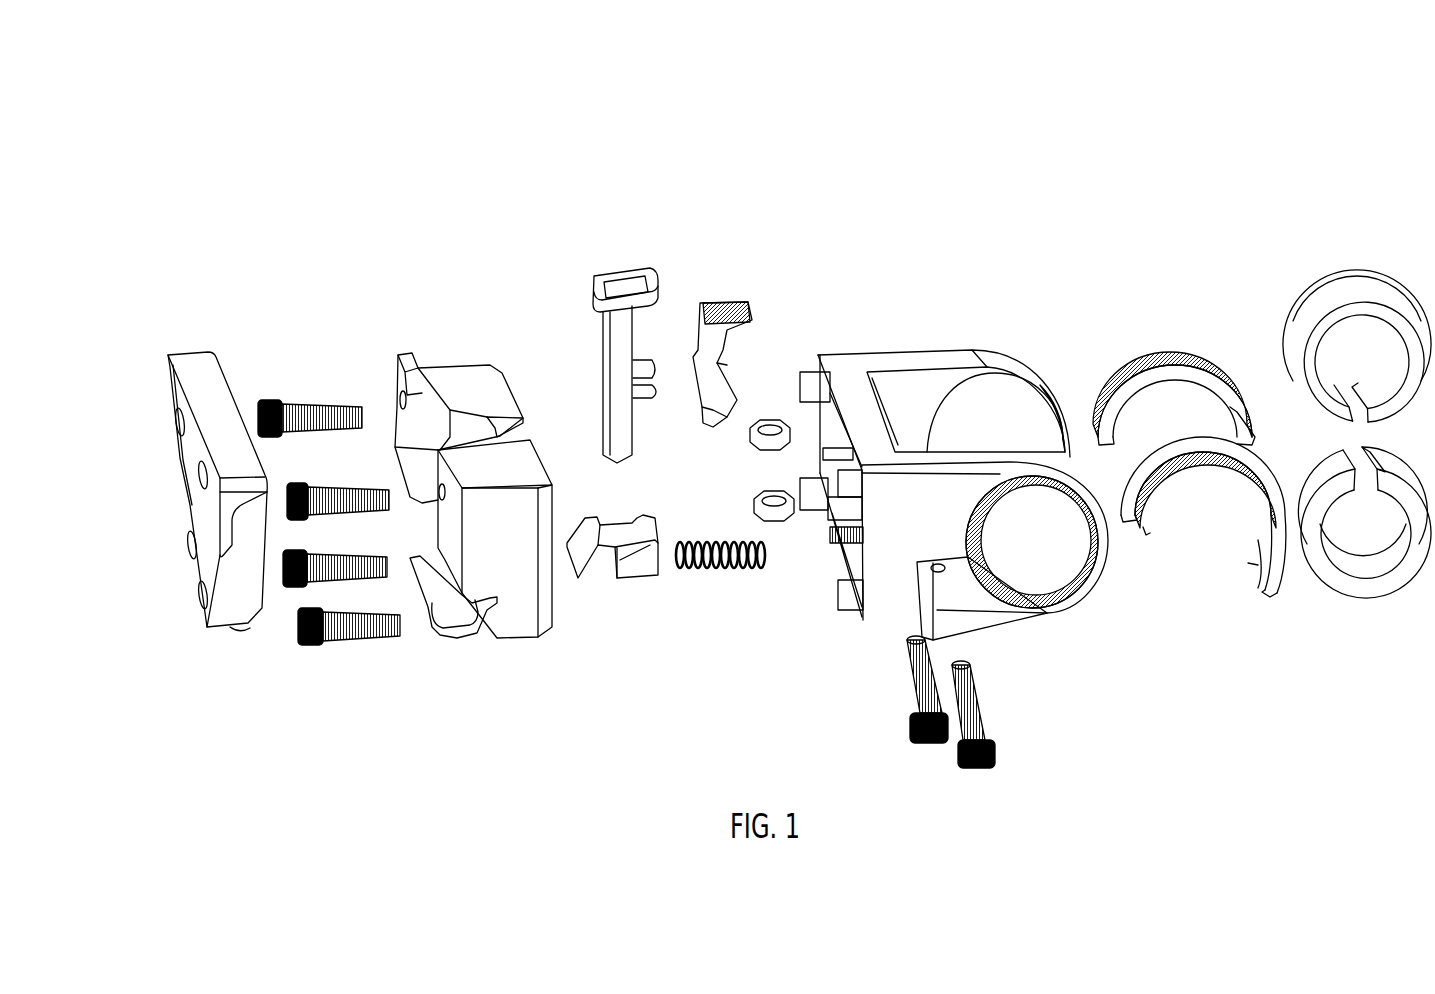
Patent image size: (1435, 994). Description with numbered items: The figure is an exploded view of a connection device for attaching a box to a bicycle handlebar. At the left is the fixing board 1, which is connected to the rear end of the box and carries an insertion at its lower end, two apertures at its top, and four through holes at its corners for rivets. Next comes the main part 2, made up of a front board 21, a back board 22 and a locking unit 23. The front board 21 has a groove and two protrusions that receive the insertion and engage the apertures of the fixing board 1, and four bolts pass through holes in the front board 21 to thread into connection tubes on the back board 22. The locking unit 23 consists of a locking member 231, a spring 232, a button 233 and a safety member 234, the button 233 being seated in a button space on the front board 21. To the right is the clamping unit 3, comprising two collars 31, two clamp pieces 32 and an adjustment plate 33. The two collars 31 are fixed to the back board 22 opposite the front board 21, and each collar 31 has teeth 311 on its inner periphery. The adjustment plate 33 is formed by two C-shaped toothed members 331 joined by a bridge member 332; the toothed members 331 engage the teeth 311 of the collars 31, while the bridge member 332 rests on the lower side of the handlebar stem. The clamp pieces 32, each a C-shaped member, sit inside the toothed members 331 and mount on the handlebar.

The fixing board 1 is at (193, 368).
The main part 2 is at (838, 140).
The front board 21 is at (475, 372).
The back board 22 is at (847, 368).
The locking unit 23 is at (522, 213).
The locking member 231 is at (593, 517).
The spring 232 is at (710, 543).
The button 233 is at (622, 283).
The safety member 234 is at (727, 303).
The clamping unit 3 is at (1032, 143).
The collar 31 is at (985, 355).
The teeth 311 is at (1057, 438).
The clamp piece 32 is at (1345, 293).
The adjustment plate 33 is at (1183, 350).
The toothed member 331 is at (1158, 355).
The bridge member 332 is at (1248, 563).